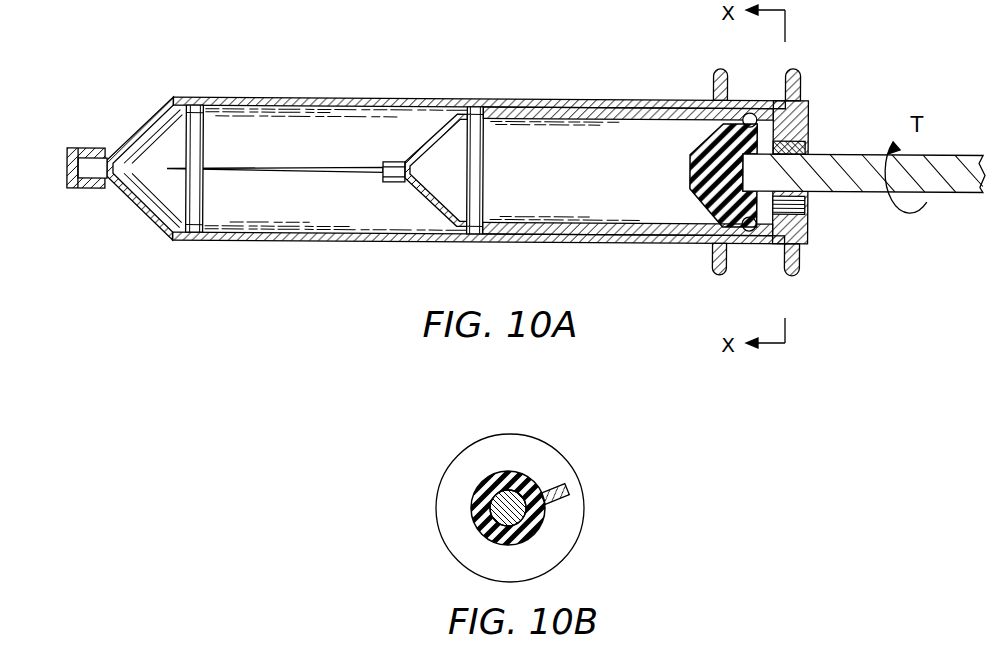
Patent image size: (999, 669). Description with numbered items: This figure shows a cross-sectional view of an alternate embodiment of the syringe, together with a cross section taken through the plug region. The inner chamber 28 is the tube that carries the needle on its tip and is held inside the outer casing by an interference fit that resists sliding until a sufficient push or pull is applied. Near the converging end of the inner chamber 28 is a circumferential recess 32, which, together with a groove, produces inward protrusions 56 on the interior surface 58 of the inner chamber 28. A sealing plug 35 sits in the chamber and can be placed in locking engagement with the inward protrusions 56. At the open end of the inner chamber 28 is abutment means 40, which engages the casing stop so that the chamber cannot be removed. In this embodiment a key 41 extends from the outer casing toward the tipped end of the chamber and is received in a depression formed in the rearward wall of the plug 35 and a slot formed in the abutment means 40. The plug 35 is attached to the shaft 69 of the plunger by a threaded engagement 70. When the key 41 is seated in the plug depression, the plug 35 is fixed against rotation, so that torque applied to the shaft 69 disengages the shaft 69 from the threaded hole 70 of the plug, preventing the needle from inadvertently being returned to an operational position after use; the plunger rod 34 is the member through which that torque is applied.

In FIG. 10A, the inner chamber 28 is at (590, 122).
In FIG. 10A, the circumferential recess 32 is at (482, 241).
In FIG. 10A, the plunger rod 34 is at (943, 197).
In FIG. 10A, the sealing plug 35 is at (693, 175).
In FIG. 10B, the sealing plug 35 is at (480, 488).
In FIG. 10A, the abutment means 40 is at (780, 98).
In FIG. 10B, the abutment means 40 is at (453, 556).
In FIG. 10A, the key 41 is at (785, 143).
In FIG. 10B, the key 41 is at (570, 490).
In FIG. 10A, the inward protrusions 56 is at (485, 113).
In FIG. 10A, the interior surface 58 is at (618, 223).
In FIG. 10A, the shaft 69 is at (947, 162).
In FIG. 10B, the shaft 69 is at (510, 490).
In FIG. 10A, the threaded engagement 70 is at (805, 200).